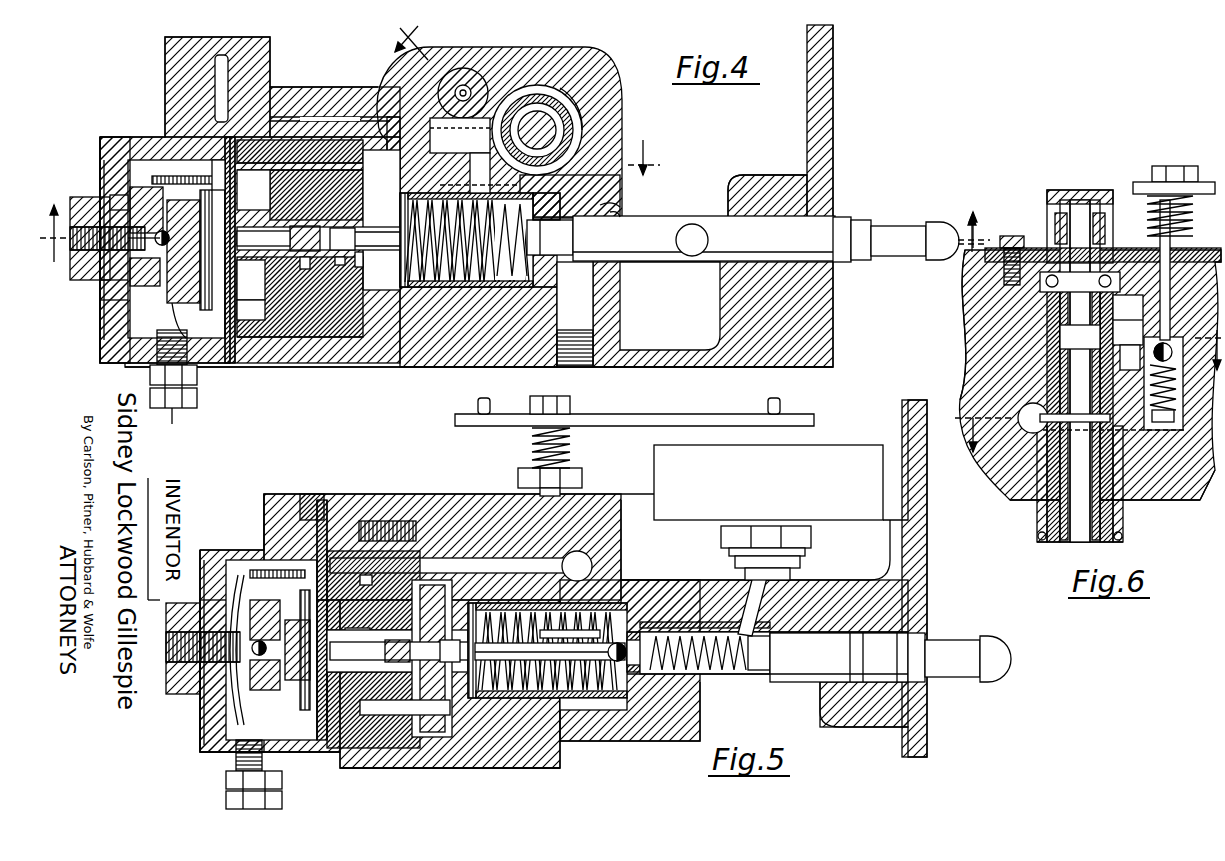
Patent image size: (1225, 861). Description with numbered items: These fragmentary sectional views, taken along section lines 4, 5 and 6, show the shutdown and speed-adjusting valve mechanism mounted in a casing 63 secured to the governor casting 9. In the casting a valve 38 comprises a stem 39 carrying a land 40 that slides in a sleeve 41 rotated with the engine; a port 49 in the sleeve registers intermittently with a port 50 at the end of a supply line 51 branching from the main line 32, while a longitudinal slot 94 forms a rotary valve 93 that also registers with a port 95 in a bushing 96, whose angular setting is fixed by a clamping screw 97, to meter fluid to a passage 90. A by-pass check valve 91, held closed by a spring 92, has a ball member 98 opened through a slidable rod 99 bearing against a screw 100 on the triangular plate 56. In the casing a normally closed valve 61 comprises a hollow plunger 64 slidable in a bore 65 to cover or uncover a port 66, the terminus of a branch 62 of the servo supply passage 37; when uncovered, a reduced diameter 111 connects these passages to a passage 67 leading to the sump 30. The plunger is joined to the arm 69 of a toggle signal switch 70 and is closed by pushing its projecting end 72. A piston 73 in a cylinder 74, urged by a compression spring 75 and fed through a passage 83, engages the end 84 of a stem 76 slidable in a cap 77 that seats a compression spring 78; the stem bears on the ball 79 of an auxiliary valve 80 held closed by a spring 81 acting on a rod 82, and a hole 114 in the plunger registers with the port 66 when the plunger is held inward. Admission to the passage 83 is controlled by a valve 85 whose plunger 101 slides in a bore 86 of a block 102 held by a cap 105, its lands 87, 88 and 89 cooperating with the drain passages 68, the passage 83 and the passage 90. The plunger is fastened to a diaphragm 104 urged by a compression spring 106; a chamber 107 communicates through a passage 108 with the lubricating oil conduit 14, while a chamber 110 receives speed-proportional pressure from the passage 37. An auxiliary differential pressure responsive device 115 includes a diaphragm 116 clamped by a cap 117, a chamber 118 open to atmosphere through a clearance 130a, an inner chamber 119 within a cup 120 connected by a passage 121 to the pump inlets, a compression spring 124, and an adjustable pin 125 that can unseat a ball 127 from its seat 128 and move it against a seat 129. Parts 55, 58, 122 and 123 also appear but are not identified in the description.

In FIG. 6, the section line 4— 4 is at (1090, 402).
In FIG. 4, the section line 5— 5 is at (514, 220).
In FIG. 6, the section line 5— 5 is at (974, 219).
In FIG. 4, the section line 6— 6 is at (521, 100).
In FIG. 6, the governor casting 9 is at (1160, 500).
In FIG. 4, the lubricating oil supply conduit 14 is at (180, 428).
In FIG. 4, the sump 30 is at (720, 310).
In FIG. 4, the main line 32 is at (218, 80).
In FIG. 4, the passage 37 is at (325, 168).
In FIG. 5, the passage 37 is at (312, 498).
In FIG. 6, the passage 37 is at (1185, 450).
In FIG. 6, the valve 38 is at (995, 364).
In FIG. 4, the stem 39 is at (540, 146).
In FIG. 6, the stem 39 is at (1085, 540).
In FIG. 6, the land 40 is at (1110, 445).
In FIG. 4, the sleeve 41 is at (572, 106).
In FIG. 6, the sleeve 41 is at (1110, 528).
In FIG. 6, the port 49 is at (1040, 385).
In FIG. 6, the port 50 is at (1080, 371).
In FIG. 4, the supply line 51 is at (378, 100).
In FIG. 6, the supply line 51 is at (1150, 385).
In FIG. 5, the clip 55 is at (487, 406).
In FIG. 5, the triangular plate 56 is at (502, 426).
In FIG. 6, the triangular plate 56 is at (1200, 190).
In FIG. 5, the spring 58 is at (532, 449).
In FIG. 6, the spring 58 is at (1192, 214).
In FIG. 4, the valve 61 is at (548, 282).
In FIG. 5, the valve 61 is at (588, 700).
In FIG. 4, the branch 62 is at (615, 203).
In FIG. 6, the branch 62 is at (1025, 432).
In FIG. 4, the casing 63 is at (428, 367).
In FIG. 5, the casing 63 is at (560, 760).
In FIG. 4, the hollow plunger 64 is at (640, 262).
In FIG. 5, the hollow plunger 64 is at (740, 682).
In FIG. 4, the bore 65 is at (560, 265).
In FIG. 5, the bore 65 is at (640, 675).
In FIG. 4, the port 66 is at (573, 225).
In FIG. 5, the port 66 is at (672, 682).
In FIG. 4, the passage 67 is at (482, 290).
In FIG. 5, the passage 67 is at (560, 700).
In FIG. 5, the drain passages 68 is at (400, 715).
In FIG. 5, the arm 69 is at (716, 618).
In FIG. 5, the toggle signal switch 70 is at (758, 522).
In FIG. 4, the end 72 is at (940, 222).
In FIG. 5, the end 72 is at (992, 655).
In FIG. 4, the piston 73 is at (410, 290).
In FIG. 5, the piston 73 is at (470, 680).
In FIG. 4, the cylinder 74 is at (395, 290).
In FIG. 5, the cylinder 74 is at (485, 690).
In FIG. 4, the compression spring 75 is at (440, 290).
In FIG. 5, the compression spring 75 is at (551, 649).
In FIG. 5, the stem 76 is at (598, 612).
In FIG. 4, the cap 77 is at (546, 205).
In FIG. 5, the cap 77 is at (578, 612).
In FIG. 4, the compression spring 78 is at (510, 290).
In FIG. 5, the compression spring 78 is at (551, 688).
In FIG. 5, the ball 79 is at (598, 670).
In FIG. 5, the valve 80 is at (570, 659).
In FIG. 5, the spring 81 is at (712, 640).
In FIG. 5, the rod 82 is at (680, 640).
In FIG. 4, the passage 83 is at (298, 266).
In FIG. 5, the passage 83 is at (376, 578).
In FIG. 5, the end 84 is at (428, 658).
In FIG. 4, the valve 85 is at (312, 272).
In FIG. 5, the valve 85 is at (384, 620).
In FIG. 4, the bore 86 is at (348, 268).
In FIG. 4, the land 87 is at (251, 280).
In FIG. 5, the land 87 is at (366, 632).
In FIG. 4, the land 88 is at (305, 229).
In FIG. 5, the land 88 is at (400, 651).
In FIG. 4, the land 89 is at (342, 228).
In FIG. 5, the land 89 is at (398, 665).
In FIG. 4, the passage 90 is at (345, 255).
In FIG. 5, the passage 90 is at (545, 573).
In FIG. 6, the passage 90 is at (1128, 318).
In FIG. 4, the by-pass check valve 91 is at (463, 66).
In FIG. 6, the by-pass check valve 91 is at (1170, 345).
In FIG. 6, the spring 92 is at (1150, 410).
In FIG. 6, the rotary valve 93 is at (1080, 337).
In FIG. 4, the longitudinal slot 94 is at (537, 128).
In FIG. 6, the longitudinal slot 94 is at (1078, 371).
In FIG. 4, the port 95 is at (460, 136).
In FIG. 6, the port 95 is at (1121, 311).
In FIG. 4, the bushing 96 is at (552, 88).
In FIG. 6, the bushing 96 is at (1040, 310).
In FIG. 6, the clamping screw 97 is at (1012, 236).
In FIG. 6, the ball member 98 is at (1129, 347).
In FIG. 4, the slidable rod 99 is at (485, 82).
In FIG. 6, the slidable rod 99 is at (1158, 235).
In FIG. 5, the screw 100 is at (553, 402).
In FIG. 6, the screw 100 is at (1172, 166).
In FIG. 4, the plunger 101 is at (272, 190).
In FIG. 4, the block 102 is at (335, 333).
In FIG. 4, the diaphragm 104 is at (232, 280).
In FIG. 5, the diaphragm 104 is at (290, 685).
In FIG. 4, the cap 105 is at (212, 363).
In FIG. 5, the cap 105 is at (264, 512).
In FIG. 4, the compression spring 106 is at (180, 300).
In FIG. 5, the compression spring 106 is at (316, 590).
In FIG. 4, the chamber 107 is at (218, 178).
In FIG. 4, the passage 108 is at (182, 322).
In FIG. 5, the passage 108 is at (266, 640).
In FIG. 4, the chamber 110 is at (262, 305).
In FIG. 5, the chamber 110 is at (373, 590).
In FIG. 5, the reduced diameter 111 is at (632, 632).
In FIG. 4, the hole 114 is at (622, 217).
In FIG. 5, the hole 114 is at (655, 628).
In FIG. 4, the auxiliary differential pressure responsive device 115 is at (118, 150).
In FIG. 4, the diaphragm 116 is at (108, 175).
In FIG. 5, the diaphragm 116 is at (206, 716).
In FIG. 4, the cap 117 is at (104, 152).
In FIG. 5, the cap 117 is at (212, 552).
In FIG. 4, the chamber 118 is at (102, 290).
In FIG. 5, the chamber 118 is at (205, 700).
In FIG. 4, the inner chamber 119 is at (104, 305).
In FIG. 5, the inner chamber 119 is at (208, 735).
In FIG. 4, the cup 120 is at (160, 176).
In FIG. 5, the cup 120 is at (275, 570).
In FIG. 5, the passage 121 is at (276, 796).
In FIG. 4, the piston 122 is at (148, 210).
In FIG. 4, the slide 123 is at (183, 251).
In FIG. 4, the compression spring 124 is at (110, 195).
In FIG. 4, the adjustable pin 125 is at (80, 260).
In FIG. 5, the ball 127 is at (244, 658).
In FIG. 4, the seat 128 is at (146, 272).
In FIG. 5, the seat 129 is at (268, 680).
In FIG. 5, the clearance 130a is at (200, 628).